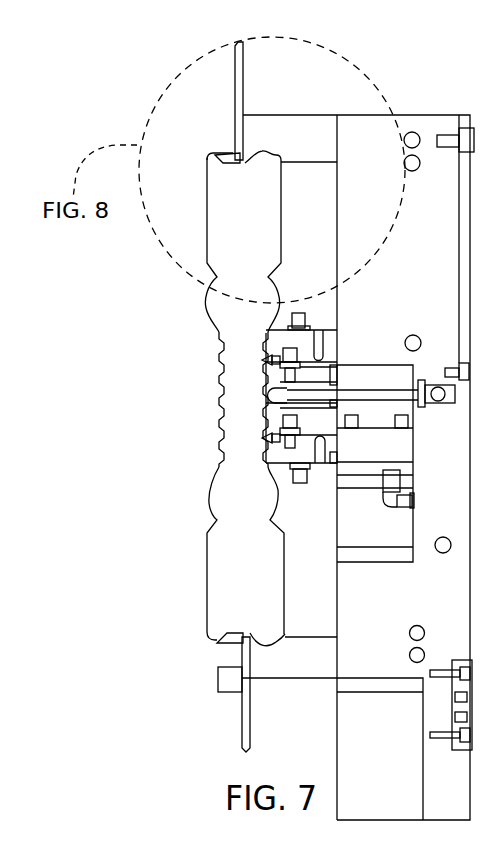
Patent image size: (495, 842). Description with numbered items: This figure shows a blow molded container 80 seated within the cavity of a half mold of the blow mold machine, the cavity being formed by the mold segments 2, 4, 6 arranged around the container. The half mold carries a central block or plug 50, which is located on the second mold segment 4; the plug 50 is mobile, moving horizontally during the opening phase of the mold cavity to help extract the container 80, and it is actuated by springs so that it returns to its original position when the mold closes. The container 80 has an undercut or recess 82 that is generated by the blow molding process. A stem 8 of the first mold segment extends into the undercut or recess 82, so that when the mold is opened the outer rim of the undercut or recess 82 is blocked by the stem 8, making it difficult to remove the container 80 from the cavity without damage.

The mold segment 2 is at (316, 122).
The second mold segment 4 is at (337, 181).
The mold segment 6 is at (308, 675).
The stem 8 is at (228, 152).
The plug 50 is at (268, 392).
The container 80 is at (210, 216).
The undercut or recess 82 is at (262, 152).